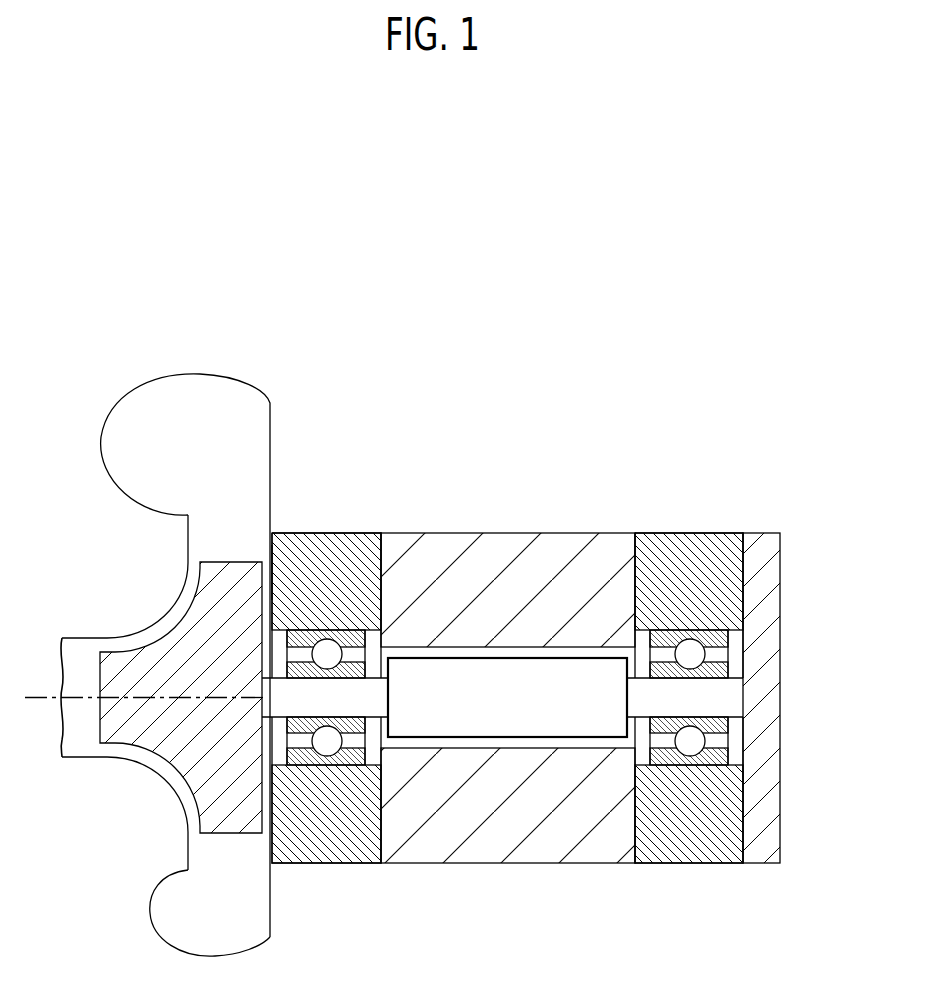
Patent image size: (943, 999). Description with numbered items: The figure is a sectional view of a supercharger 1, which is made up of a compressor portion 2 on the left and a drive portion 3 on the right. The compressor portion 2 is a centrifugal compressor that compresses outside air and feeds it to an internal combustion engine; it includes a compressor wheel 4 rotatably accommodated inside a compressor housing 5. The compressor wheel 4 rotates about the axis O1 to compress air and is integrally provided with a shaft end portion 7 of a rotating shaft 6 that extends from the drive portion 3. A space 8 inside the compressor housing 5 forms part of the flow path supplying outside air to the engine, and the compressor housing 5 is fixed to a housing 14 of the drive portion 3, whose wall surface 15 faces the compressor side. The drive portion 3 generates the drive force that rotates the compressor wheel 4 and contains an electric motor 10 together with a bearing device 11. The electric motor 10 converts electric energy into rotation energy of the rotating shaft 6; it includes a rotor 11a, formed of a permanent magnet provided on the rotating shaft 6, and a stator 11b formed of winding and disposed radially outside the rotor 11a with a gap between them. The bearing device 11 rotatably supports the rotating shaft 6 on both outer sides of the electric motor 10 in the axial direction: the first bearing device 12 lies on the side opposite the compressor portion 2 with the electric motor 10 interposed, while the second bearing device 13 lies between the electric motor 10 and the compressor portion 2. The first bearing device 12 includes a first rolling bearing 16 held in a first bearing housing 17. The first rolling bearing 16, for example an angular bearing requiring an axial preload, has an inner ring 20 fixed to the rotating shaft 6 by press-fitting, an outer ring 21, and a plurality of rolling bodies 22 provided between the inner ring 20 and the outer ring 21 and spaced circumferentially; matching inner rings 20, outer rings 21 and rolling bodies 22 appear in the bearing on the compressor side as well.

The supercharger 1 is at (527, 352).
The compressor portion 2 is at (171, 368).
The drive portion 3 is at (562, 525).
The compressor wheel 4 is at (187, 630).
The compressor housing 5 is at (107, 638).
The rotating shaft 6 is at (278, 705).
The shaft end portion 7 is at (180, 767).
The space 8 is at (203, 540).
The electric motor 10 is at (462, 525).
The bearing device 11 is at (519, 636).
The rotor 11a is at (503, 710).
The stator 11b is at (593, 848).
The first bearing device 12 is at (687, 525).
The second bearing device 13 is at (329, 525).
The housing 14 is at (350, 550).
The wall surface 15 is at (271, 566).
The first rolling bearing 16 is at (727, 638).
The first bearing housing 17 is at (728, 548).
The inner ring 20 is at (363, 668).
The outer ring 21 is at (352, 760).
The rolling body 22 is at (325, 747).
The axis O1 is at (43, 695).